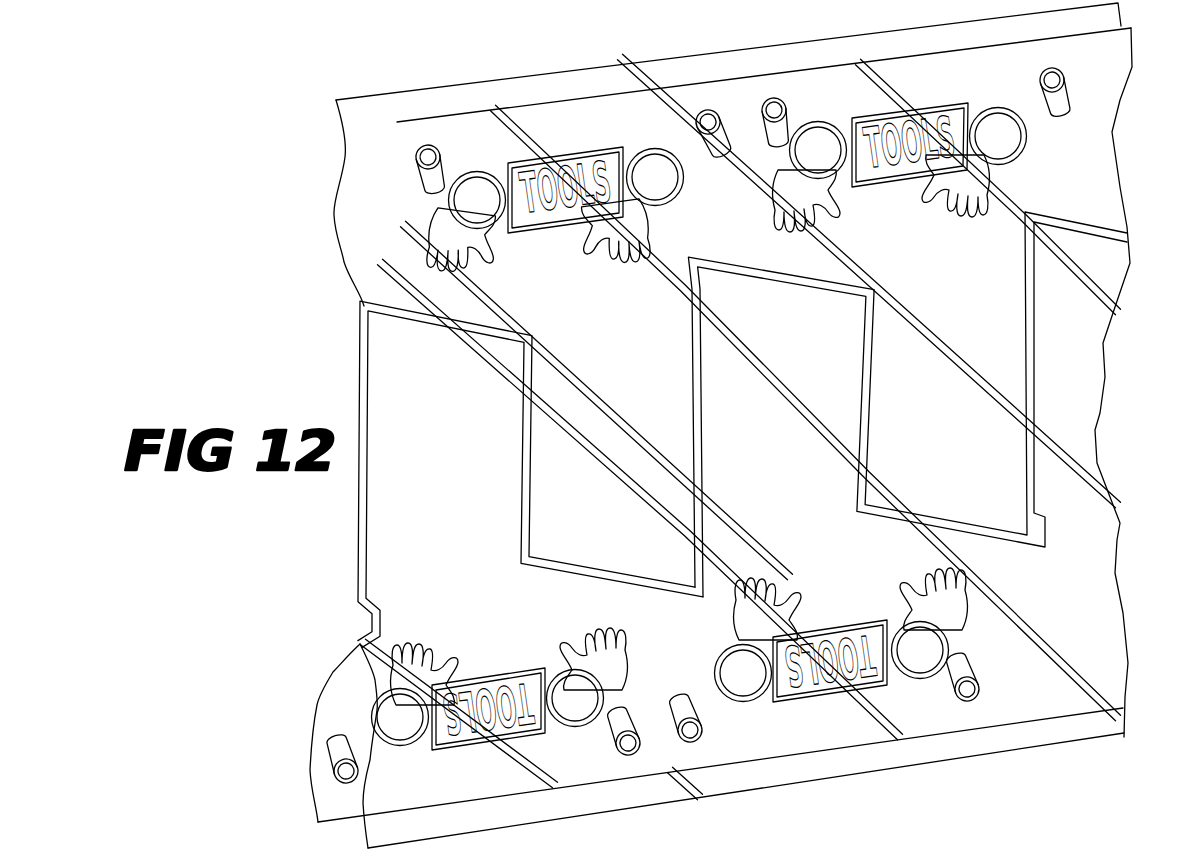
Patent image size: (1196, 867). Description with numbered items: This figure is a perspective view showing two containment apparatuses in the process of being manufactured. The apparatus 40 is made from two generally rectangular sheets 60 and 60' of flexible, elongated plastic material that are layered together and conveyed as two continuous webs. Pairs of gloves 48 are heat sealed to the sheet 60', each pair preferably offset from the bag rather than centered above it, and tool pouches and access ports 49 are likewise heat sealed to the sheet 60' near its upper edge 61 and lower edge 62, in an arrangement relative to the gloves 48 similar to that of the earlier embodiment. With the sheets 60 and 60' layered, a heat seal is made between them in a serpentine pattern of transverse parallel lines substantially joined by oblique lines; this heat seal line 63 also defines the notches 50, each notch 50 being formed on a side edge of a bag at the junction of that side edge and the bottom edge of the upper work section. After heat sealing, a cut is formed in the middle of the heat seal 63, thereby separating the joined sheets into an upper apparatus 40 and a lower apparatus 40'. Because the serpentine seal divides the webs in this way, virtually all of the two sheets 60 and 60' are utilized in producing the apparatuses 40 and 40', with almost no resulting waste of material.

The apparatus 40 is at (703, 95).
The lower apparatus 40' is at (683, 795).
The pairs of gloves 48 is at (655, 170).
The tool pouches and access ports 49 is at (713, 115).
The notch 50 is at (718, 285).
The sheet 60 is at (312, 461).
The sheet 60' is at (346, 450).
The upper edge 61 is at (587, 100).
The lower edge 62 is at (867, 747).
The heat seal line 63 is at (533, 508).